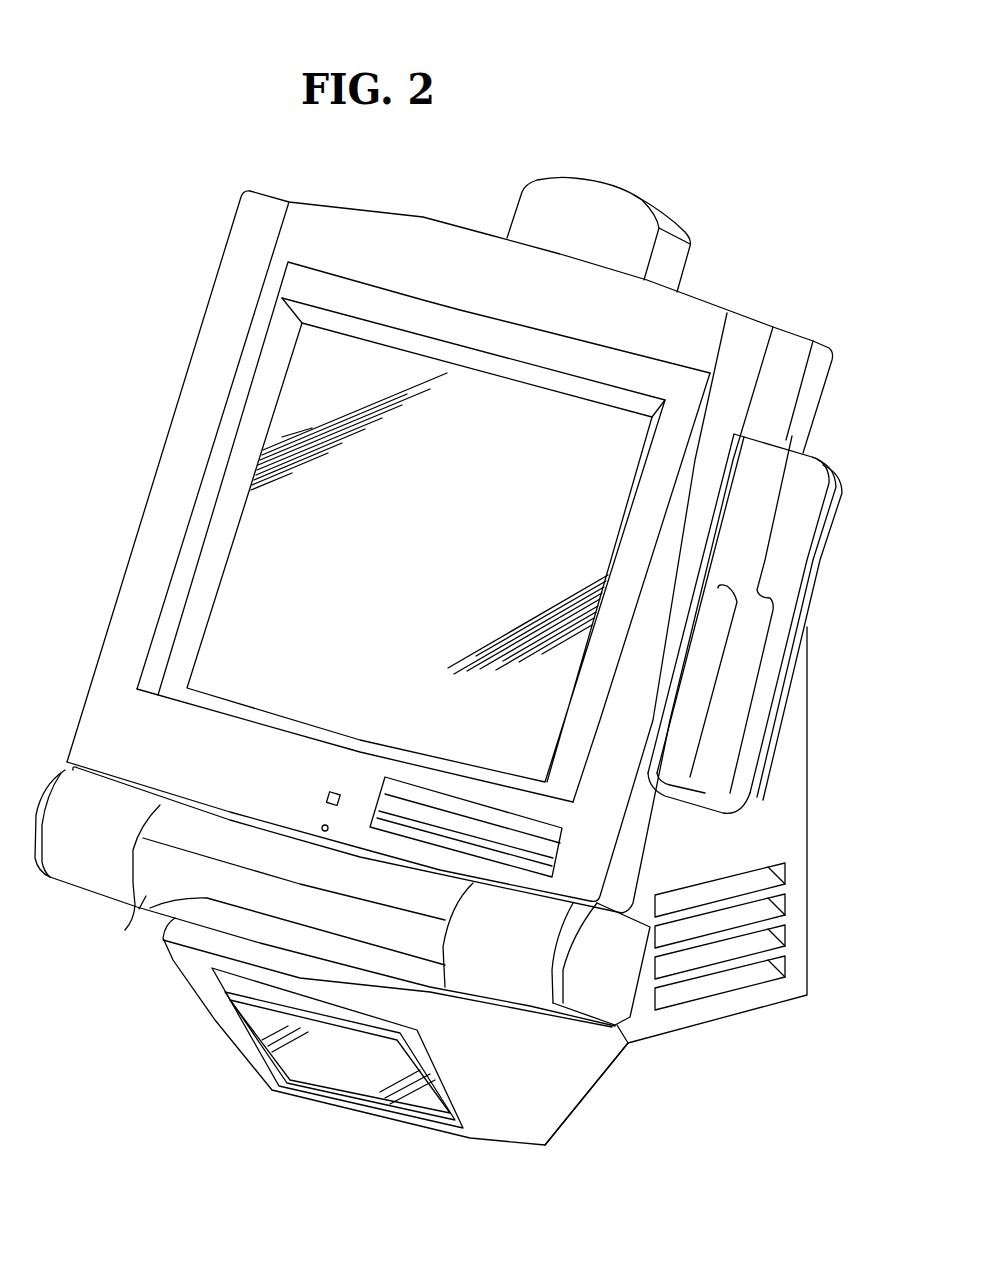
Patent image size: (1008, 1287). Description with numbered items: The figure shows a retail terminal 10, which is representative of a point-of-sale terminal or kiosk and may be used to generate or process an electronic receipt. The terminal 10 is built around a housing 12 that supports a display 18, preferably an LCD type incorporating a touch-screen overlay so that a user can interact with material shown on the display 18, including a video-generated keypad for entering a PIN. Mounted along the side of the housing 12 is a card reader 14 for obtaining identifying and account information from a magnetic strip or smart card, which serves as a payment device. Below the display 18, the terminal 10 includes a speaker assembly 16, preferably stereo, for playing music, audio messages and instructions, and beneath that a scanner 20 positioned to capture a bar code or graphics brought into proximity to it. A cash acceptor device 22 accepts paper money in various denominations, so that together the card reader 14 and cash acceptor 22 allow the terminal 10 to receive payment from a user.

The retail terminal 10 is at (698, 153).
The housing 12 is at (265, 256).
The card reader 14 is at (787, 540).
The speaker assembly 16 is at (148, 893).
The display 18 is at (243, 640).
The scanner 20 is at (335, 1077).
The cash acceptor device 22 is at (563, 830).